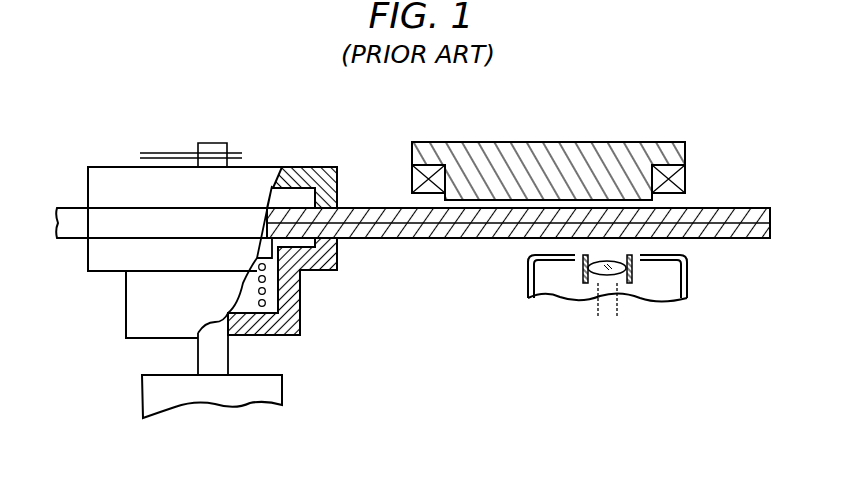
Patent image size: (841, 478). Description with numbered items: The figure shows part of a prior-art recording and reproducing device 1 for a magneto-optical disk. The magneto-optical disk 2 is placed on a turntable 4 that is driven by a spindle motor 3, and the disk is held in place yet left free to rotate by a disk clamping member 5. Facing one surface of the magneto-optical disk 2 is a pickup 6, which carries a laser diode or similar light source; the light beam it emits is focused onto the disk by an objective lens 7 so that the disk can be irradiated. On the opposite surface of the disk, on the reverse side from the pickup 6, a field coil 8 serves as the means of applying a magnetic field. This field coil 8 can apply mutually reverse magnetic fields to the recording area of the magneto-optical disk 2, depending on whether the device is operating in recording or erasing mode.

The recording and reproducing device 1 is at (548, 142).
The magneto-optical disk 2 is at (431, 239).
The spindle motor 3 is at (282, 388).
The turntable 4 is at (338, 253).
The disk clamping member 5 is at (325, 164).
The pickup 6 is at (687, 280).
The objective lens 7 is at (607, 222).
The field coil 8 is at (627, 142).